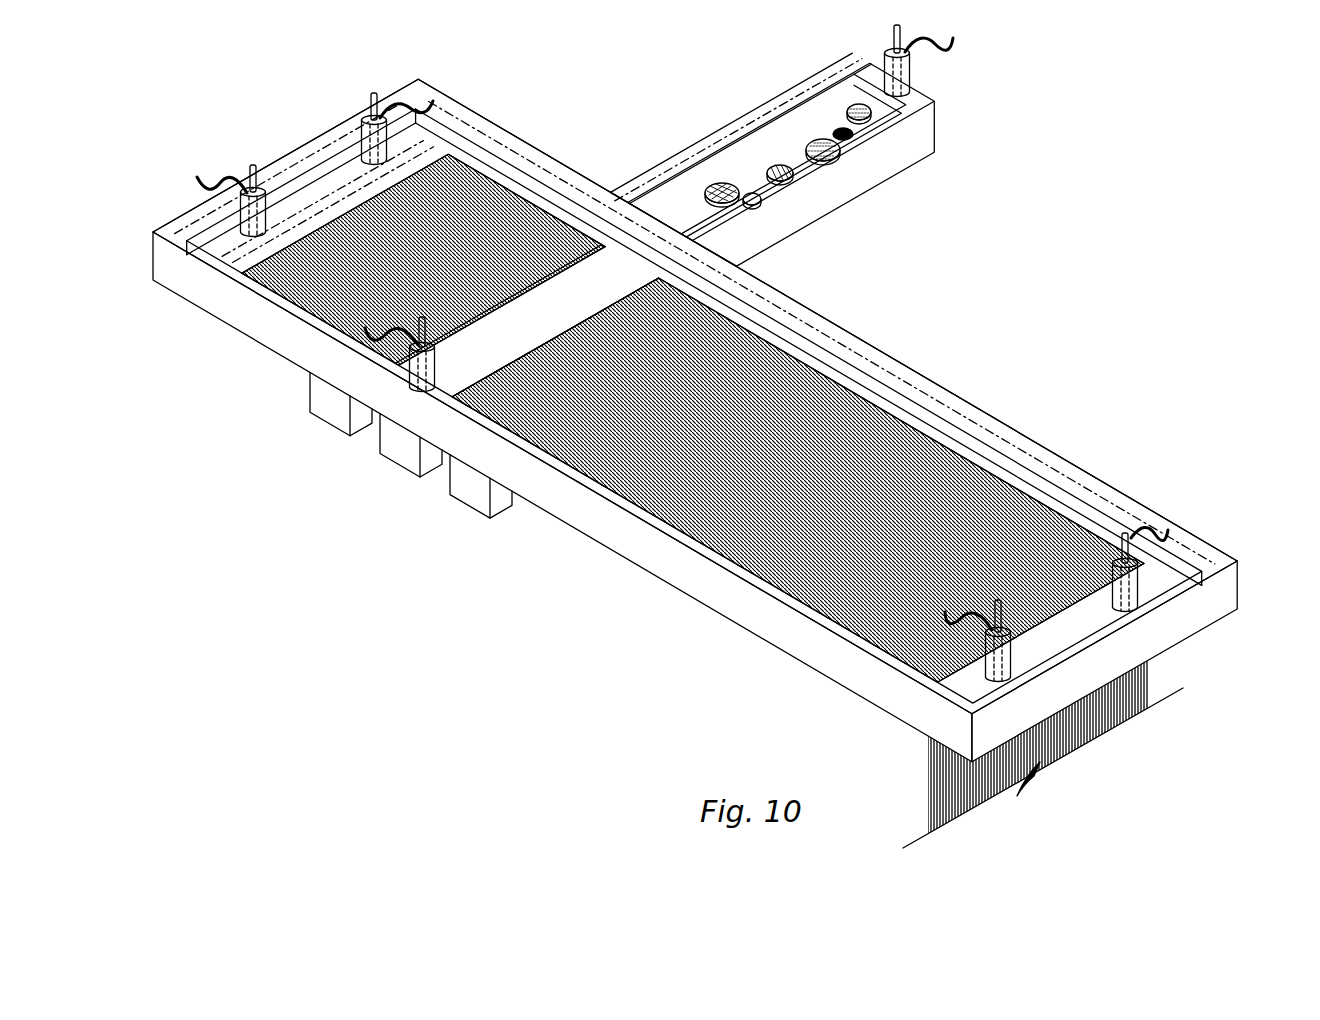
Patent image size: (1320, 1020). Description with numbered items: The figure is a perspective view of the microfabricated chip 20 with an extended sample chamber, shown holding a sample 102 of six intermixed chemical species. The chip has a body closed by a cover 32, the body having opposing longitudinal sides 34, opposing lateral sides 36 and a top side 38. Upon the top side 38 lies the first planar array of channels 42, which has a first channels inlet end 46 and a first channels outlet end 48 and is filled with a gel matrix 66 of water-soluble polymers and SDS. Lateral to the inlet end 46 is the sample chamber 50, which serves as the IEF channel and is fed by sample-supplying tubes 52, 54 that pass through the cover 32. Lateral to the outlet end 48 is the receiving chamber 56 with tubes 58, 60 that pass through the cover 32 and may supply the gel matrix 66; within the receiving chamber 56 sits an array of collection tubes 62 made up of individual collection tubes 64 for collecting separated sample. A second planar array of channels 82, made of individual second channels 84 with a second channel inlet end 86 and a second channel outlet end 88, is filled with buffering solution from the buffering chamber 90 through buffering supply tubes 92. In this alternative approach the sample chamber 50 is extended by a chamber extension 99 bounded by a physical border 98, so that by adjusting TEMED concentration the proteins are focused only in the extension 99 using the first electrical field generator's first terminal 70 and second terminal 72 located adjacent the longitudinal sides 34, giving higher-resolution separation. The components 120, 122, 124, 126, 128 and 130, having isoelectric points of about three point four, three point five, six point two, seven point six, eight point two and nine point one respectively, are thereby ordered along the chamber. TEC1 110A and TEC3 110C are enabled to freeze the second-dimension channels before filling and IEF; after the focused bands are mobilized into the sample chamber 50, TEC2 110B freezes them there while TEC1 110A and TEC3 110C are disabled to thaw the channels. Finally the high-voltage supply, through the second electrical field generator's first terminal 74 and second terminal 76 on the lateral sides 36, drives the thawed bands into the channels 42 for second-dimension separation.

The microfabricated chip 20 is at (691, 436).
The cover 32 is at (672, 420).
The opposing longitudinal sides 34 is at (636, 549).
The opposing lateral sides 36 is at (1176, 645).
The top side 38 is at (955, 404).
The first planar array of channels 42 is at (890, 379).
The first channels inlet end 46 is at (629, 293).
The first channels outlet end 48 is at (1058, 596).
The sample chamber 50 is at (623, 266).
The sample-supplying tube 52 is at (409, 392).
The sample-supplying tube 54 is at (891, 49).
The receiving chamber 56 is at (1222, 570).
The tube 58 is at (1010, 621).
The tube 60 is at (1123, 536).
The array of collection tubes 62 is at (922, 771).
The collection tube 64 is at (1118, 746).
The gel matrix 66 is at (800, 336).
The first terminal 70 is at (386, 377).
The second terminal 72 is at (952, 41).
The first terminal 74 is at (198, 176).
The second terminal 76 is at (1169, 541).
The second planar array of channels 82 is at (523, 164).
The second channel 84 is at (493, 153).
The second channel inlet end 86 is at (481, 136).
The second channel outlet end 88 is at (505, 306).
The buffering chamber 90 is at (340, 160).
The buffering supply tubes 92 is at (253, 165).
The physical border 98 is at (936, 137).
The extended sample chamber 99 is at (934, 102).
The sample 102 is at (804, 161).
The TEC1 110A is at (323, 420).
The TEC2 110B is at (407, 463).
The TEC3 110C is at (475, 502).
The component 120 is at (859, 103).
The component 122 is at (816, 139).
The component 124 is at (747, 193).
The component 126 is at (706, 184).
The component 128 is at (777, 165).
The component 130 is at (841, 127).